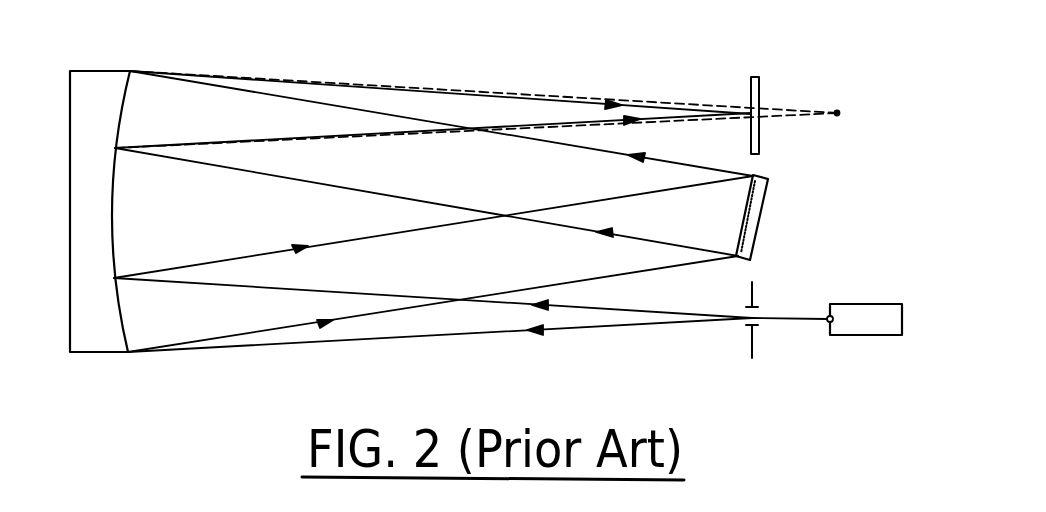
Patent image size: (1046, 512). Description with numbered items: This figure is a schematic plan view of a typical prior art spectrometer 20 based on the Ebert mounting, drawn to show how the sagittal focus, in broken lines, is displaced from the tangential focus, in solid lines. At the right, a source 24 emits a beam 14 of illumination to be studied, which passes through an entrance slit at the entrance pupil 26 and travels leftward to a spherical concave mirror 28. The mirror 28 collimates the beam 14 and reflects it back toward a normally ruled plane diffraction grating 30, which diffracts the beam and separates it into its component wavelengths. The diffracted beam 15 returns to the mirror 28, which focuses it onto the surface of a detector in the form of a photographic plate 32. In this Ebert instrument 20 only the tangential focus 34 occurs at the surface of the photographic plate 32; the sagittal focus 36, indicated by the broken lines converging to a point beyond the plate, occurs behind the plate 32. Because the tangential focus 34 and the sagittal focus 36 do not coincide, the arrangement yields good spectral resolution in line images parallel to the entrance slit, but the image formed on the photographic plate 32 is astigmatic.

The spectrometer 20 is at (248, 42).
The spherical concave mirror 28 is at (98, 62).
The beam 14 is at (503, 292).
The diffracted beam 15 is at (560, 124).
The plane diffraction grating 30 is at (758, 233).
The photographic plate 32 is at (760, 77).
The tangential focus 34 is at (750, 106).
The sagittal focus 36 is at (838, 112).
The entrance pupil 26 is at (753, 340).
The source 24 is at (871, 336).